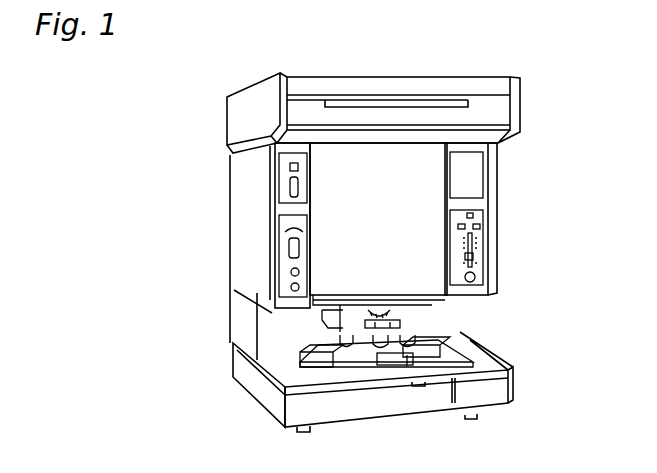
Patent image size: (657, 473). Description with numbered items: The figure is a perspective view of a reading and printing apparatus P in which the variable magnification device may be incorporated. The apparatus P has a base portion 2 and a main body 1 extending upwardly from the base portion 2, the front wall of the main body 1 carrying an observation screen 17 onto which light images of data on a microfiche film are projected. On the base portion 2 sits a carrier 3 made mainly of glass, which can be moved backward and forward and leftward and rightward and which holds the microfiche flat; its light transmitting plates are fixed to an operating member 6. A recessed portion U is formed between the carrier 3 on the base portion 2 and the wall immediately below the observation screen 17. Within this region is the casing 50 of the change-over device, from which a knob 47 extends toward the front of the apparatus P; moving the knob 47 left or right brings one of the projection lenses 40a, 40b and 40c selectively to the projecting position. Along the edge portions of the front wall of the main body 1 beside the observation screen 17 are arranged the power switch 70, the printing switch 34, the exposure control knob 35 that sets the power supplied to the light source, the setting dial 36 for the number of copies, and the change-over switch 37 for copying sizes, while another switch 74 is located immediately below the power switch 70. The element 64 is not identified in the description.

The main body 1 is at (248, 207).
The base portion 2 is at (240, 365).
The carrier 3 is at (365, 367).
The operating member 6 is at (407, 357).
The observation screen 17 is at (423, 168).
The printing switch 34 is at (475, 275).
The exposure control knob 35 is at (475, 255).
The setting dial 36 is at (290, 183).
The change-over switch 37 is at (288, 248).
The projection lens 40a is at (383, 357).
The projection lens 40b is at (336, 352).
The projection lens 40c is at (441, 347).
The knob 47 is at (405, 327).
The casing 50 is at (345, 310).
The grinding wheel 64 is at (400, 318).
The power switch 70 is at (291, 272).
The switch 74 is at (291, 287).
The reading and printing apparatus P is at (537, 194).
The recessed portion U is at (277, 332).